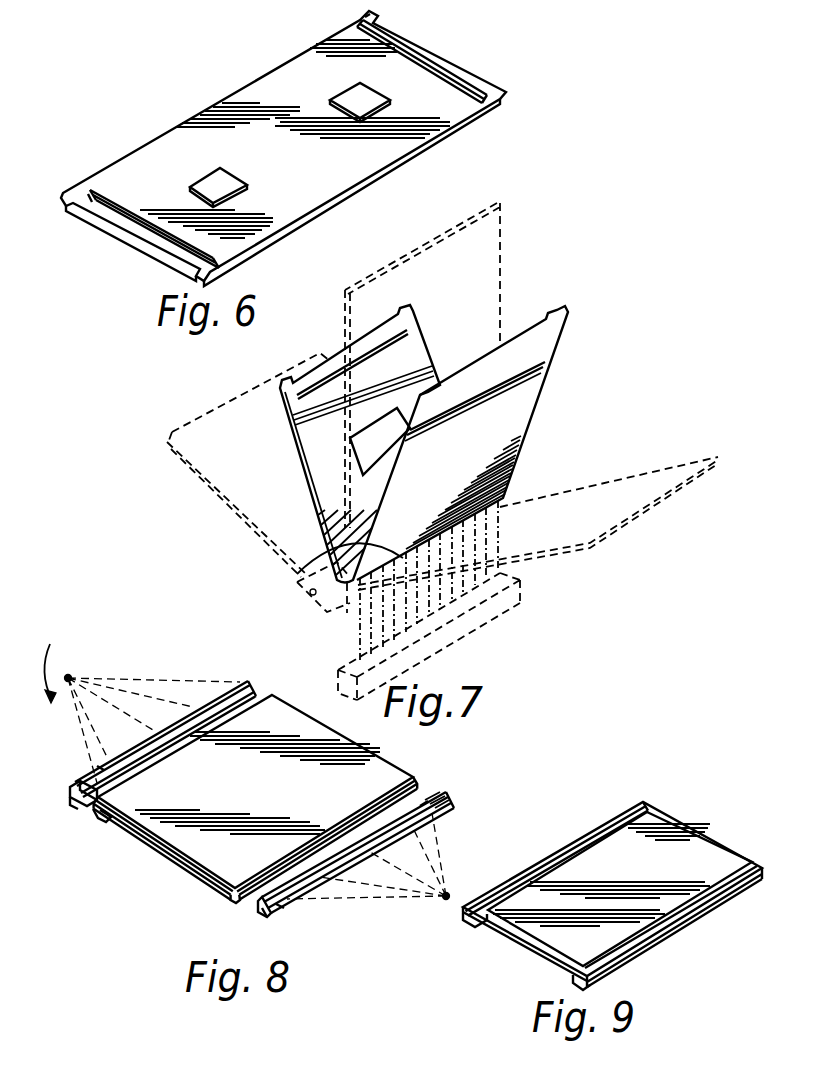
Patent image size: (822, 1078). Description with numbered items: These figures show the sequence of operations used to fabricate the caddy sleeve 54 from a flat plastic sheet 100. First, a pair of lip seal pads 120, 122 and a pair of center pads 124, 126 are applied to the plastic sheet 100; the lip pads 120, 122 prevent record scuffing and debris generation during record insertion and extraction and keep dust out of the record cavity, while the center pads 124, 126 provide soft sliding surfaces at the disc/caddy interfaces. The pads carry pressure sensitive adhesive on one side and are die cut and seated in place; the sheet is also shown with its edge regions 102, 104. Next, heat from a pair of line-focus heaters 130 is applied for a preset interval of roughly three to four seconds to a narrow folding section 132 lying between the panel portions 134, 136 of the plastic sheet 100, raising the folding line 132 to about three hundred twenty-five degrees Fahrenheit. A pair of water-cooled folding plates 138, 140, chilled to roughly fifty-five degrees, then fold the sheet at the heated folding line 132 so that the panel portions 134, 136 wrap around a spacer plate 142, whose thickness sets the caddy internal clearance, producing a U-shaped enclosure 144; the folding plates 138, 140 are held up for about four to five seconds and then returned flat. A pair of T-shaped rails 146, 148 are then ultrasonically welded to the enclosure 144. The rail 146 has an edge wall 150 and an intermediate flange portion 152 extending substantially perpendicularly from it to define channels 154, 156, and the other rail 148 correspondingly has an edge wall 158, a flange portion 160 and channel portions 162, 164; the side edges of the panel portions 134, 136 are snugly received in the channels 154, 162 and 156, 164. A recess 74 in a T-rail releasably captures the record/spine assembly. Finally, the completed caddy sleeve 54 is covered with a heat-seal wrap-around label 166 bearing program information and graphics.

In FIG. 6, the plastic sheet 100 is at (283, 73).
In FIG. 6, the guide rail 102 is at (150, 248).
In FIG. 6, the guide rail 104 is at (436, 53).
In FIG. 6, the lip seal pad 120 is at (110, 213).
In FIG. 6, the lip seal pad 122 is at (358, 32).
In FIG. 6, the center pad 124 is at (213, 178).
In FIG. 6, the center pad 126 is at (373, 100).
In FIG. 7, the line-focus heater 130 is at (460, 630).
In FIG. 7, the folding section 132 is at (300, 573).
In FIG. 7, the panel portion 134 is at (277, 403).
In FIG. 7, the panel portion 136 is at (560, 320).
In FIG. 7, the folding plate 138 is at (178, 433).
In FIG. 7, the folding plate 140 is at (633, 498).
In FIG. 7, the spacer plate 142 is at (490, 277).
In FIG. 8, the U-shaped enclosure 144 is at (347, 743).
In FIG. 8, the T-shaped rail 146 is at (142, 702).
In FIG. 8, the T-shaped rail 148 is at (460, 802).
In FIG. 8, the edge wall 150 is at (70, 793).
In FIG. 8, the intermediate flange portion 152 is at (97, 810).
In FIG. 8, the channel 154 is at (243, 692).
In FIG. 8, the channel 156 is at (110, 807).
In FIG. 8, the edge wall 158 is at (284, 908).
In FIG. 8, the flange portion 160 is at (258, 905).
In FIG. 8, the channel portion 162 is at (420, 800).
In FIG. 8, the channel portion 164 is at (263, 911).
In FIG. 8, the recess 74 is at (100, 767).
In FIG. 9, the caddy sleeve 54 is at (551, 848).
In FIG. 9, the wrap-around label 166 is at (672, 843).